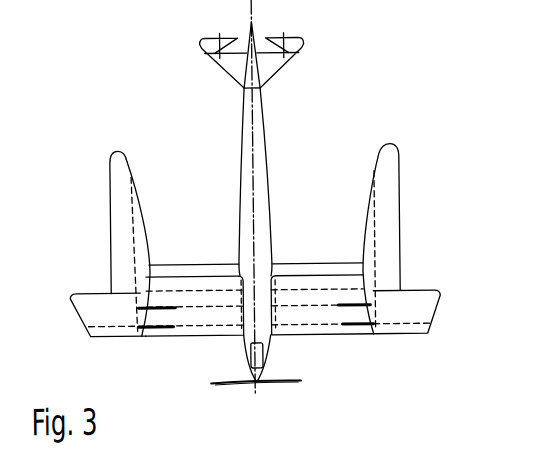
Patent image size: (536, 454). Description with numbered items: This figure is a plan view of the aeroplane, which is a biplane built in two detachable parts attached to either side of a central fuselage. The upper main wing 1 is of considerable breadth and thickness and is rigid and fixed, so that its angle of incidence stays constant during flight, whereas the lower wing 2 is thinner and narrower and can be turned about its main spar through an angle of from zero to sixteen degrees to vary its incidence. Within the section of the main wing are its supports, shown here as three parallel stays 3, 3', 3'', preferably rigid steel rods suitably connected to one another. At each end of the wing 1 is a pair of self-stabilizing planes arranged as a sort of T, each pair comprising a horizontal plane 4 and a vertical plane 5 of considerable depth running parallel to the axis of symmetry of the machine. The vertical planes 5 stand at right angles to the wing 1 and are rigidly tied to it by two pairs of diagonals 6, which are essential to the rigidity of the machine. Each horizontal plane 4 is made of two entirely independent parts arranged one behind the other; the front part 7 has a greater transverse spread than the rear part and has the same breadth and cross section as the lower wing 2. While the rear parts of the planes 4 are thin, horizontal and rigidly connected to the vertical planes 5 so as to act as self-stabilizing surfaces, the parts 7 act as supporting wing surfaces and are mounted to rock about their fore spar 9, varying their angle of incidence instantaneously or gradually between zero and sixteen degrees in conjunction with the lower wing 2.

The upper main wing 1 is at (302, 315).
The lower wing 2 is at (287, 265).
The stay 3 is at (196, 356).
The stay 3' is at (195, 347).
The stay 3'' is at (195, 339).
The horizontal plane 4 is at (120, 240).
The vertical plane 5 is at (135, 222).
The diagonal 6 is at (162, 328).
The supporting wing part 7 is at (97, 307).
The fore spar 9 is at (105, 322).